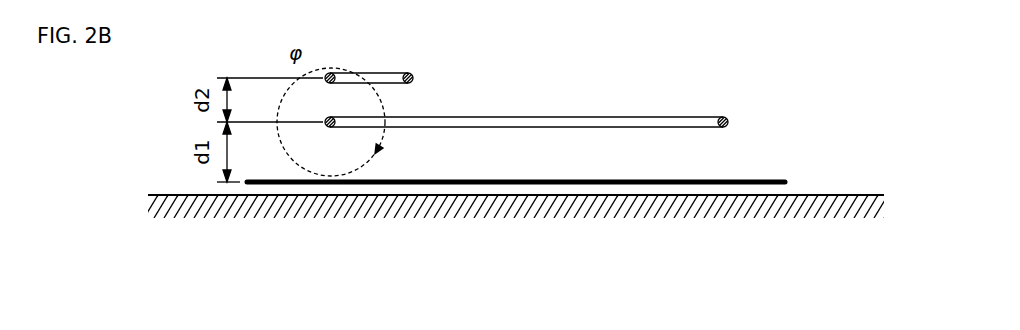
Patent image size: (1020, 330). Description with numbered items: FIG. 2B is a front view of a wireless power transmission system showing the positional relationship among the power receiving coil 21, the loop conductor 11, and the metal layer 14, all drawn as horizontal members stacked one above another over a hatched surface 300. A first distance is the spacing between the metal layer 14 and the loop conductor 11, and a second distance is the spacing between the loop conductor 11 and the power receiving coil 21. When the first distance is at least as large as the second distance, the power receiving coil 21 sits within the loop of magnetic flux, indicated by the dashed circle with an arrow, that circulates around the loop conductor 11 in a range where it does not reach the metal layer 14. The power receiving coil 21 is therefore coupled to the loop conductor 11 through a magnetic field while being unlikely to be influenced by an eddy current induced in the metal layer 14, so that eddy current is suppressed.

The loop conductor 11 is at (728, 118).
The power receiving coil 21 is at (410, 76).
The metal layer 14 is at (525, 184).
The ground stage 300 is at (835, 194).